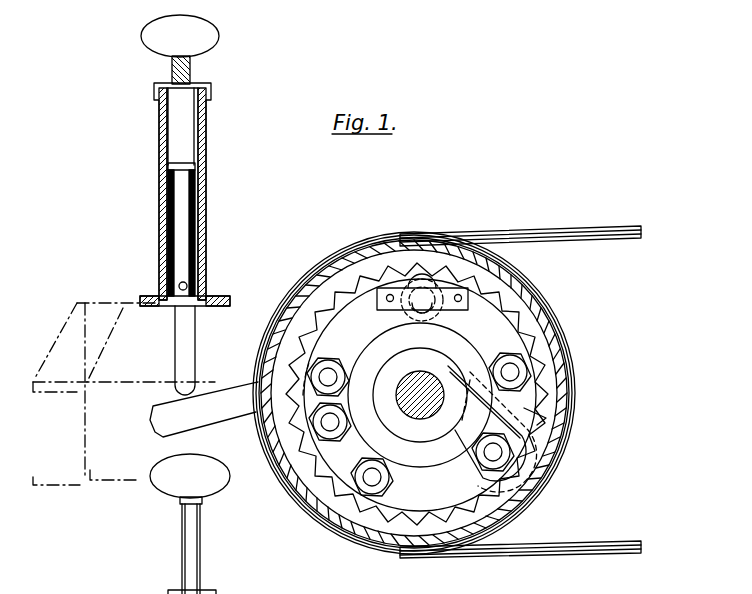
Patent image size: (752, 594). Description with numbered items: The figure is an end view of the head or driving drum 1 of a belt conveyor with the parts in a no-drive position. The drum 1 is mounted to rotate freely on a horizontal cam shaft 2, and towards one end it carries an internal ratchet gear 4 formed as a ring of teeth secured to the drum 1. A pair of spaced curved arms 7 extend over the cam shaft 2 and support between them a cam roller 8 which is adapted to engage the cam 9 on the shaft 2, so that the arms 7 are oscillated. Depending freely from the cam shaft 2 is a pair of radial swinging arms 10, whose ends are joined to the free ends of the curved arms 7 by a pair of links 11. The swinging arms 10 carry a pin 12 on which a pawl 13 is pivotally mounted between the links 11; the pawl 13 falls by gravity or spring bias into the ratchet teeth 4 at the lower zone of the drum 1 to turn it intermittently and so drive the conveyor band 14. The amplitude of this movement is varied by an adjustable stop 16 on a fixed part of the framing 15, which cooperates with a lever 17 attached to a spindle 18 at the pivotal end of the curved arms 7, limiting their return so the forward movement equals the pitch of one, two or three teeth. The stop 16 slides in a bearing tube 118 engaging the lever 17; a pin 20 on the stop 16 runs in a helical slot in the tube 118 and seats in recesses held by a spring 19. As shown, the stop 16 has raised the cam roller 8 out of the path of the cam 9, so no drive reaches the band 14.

The driving drum 1 is at (550, 317).
The cam shaft 2 is at (425, 402).
The internal ratchet gear 4 is at (396, 262).
The curved arms 7 is at (364, 340).
The cam roller 8 is at (428, 284).
The cam 9 is at (428, 353).
The radial swinging arms 10 is at (450, 440).
The links 11 is at (520, 399).
The pin 12 is at (497, 452).
The pawl 13 is at (537, 413).
The conveyor band 14 is at (593, 227).
The framing 15 is at (93, 470).
The adjustable stop 16 is at (185, 348).
The lever 17 is at (170, 422).
The spindle 18 is at (320, 367).
The spring 19 is at (162, 178).
The pin 20 is at (178, 283).
The bearing tube 118 is at (162, 218).